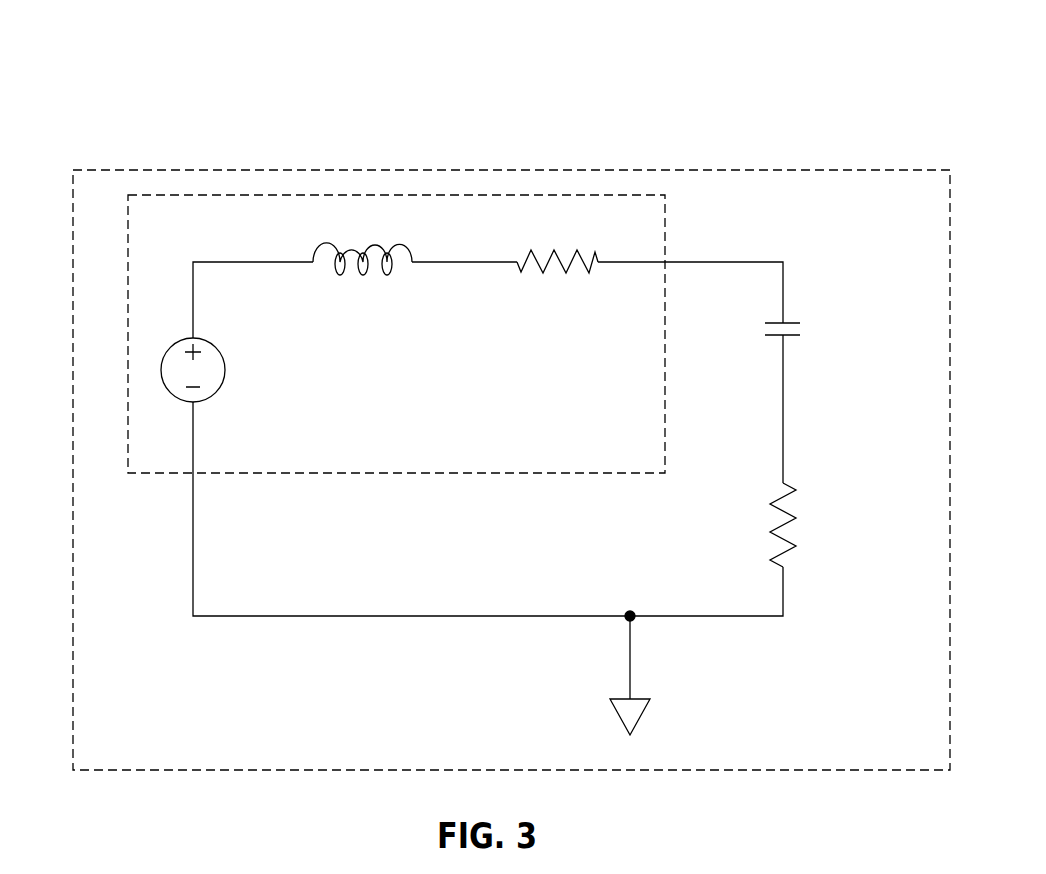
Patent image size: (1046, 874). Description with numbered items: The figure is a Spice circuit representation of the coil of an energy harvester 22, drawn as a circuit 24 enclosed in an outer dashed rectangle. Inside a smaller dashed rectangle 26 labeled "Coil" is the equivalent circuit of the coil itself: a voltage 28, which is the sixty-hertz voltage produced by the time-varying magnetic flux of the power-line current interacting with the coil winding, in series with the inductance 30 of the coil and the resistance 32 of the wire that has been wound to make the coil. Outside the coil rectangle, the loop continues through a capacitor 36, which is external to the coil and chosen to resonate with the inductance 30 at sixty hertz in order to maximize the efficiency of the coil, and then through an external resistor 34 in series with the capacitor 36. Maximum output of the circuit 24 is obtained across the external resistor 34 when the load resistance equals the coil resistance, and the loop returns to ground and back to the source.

The energy harvester 22 is at (128, 68).
The circuit 24 is at (810, 200).
The coil assembly 26 is at (203, 215).
The voltage 28 is at (222, 400).
The inductance 30 is at (363, 275).
The resistance 32 is at (543, 288).
The external resistor 34 is at (808, 568).
The capacitor 36 is at (798, 302).